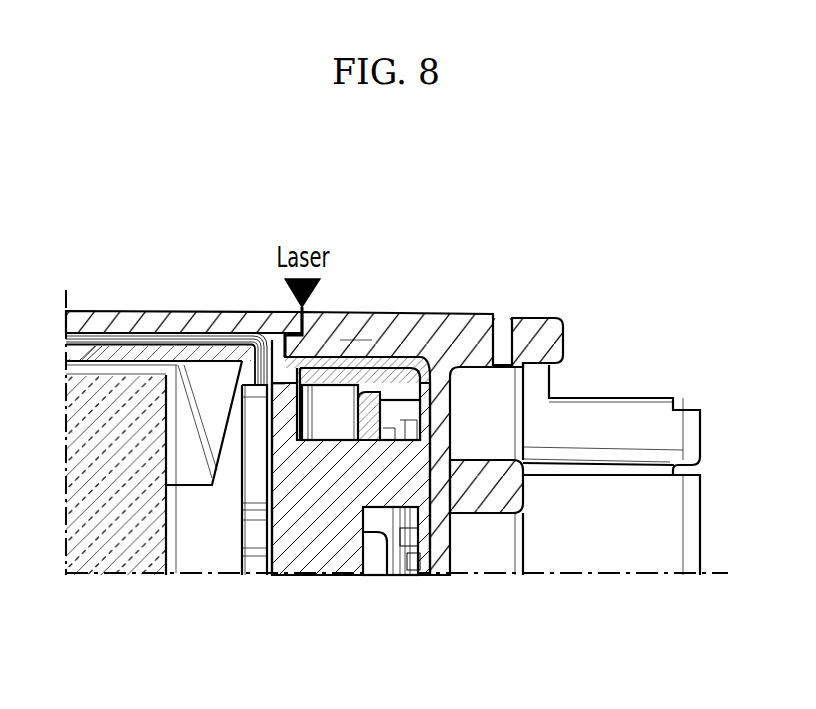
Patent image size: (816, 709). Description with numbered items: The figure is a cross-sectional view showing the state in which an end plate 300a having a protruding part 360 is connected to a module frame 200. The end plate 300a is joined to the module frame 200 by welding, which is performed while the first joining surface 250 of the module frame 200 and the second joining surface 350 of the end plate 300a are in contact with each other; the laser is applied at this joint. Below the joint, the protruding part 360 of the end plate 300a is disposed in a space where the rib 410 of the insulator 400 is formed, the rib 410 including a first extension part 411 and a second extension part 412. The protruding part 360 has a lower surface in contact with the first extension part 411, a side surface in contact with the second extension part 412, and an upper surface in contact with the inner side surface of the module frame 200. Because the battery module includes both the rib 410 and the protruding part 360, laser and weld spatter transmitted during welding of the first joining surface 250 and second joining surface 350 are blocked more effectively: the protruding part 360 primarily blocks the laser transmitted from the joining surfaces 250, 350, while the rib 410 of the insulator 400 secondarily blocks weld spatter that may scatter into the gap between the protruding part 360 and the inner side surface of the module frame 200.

The module frame 200 is at (167, 320).
The first joining surface 250 is at (277, 320).
The end plate 300a is at (457, 320).
The second joining surface 350 is at (356, 338).
The protruding part 360 is at (373, 350).
The insulator 400 is at (403, 380).
The rib 410 is at (255, 513).
The first extension part 411 is at (298, 348).
The second extension part 412 is at (238, 355).